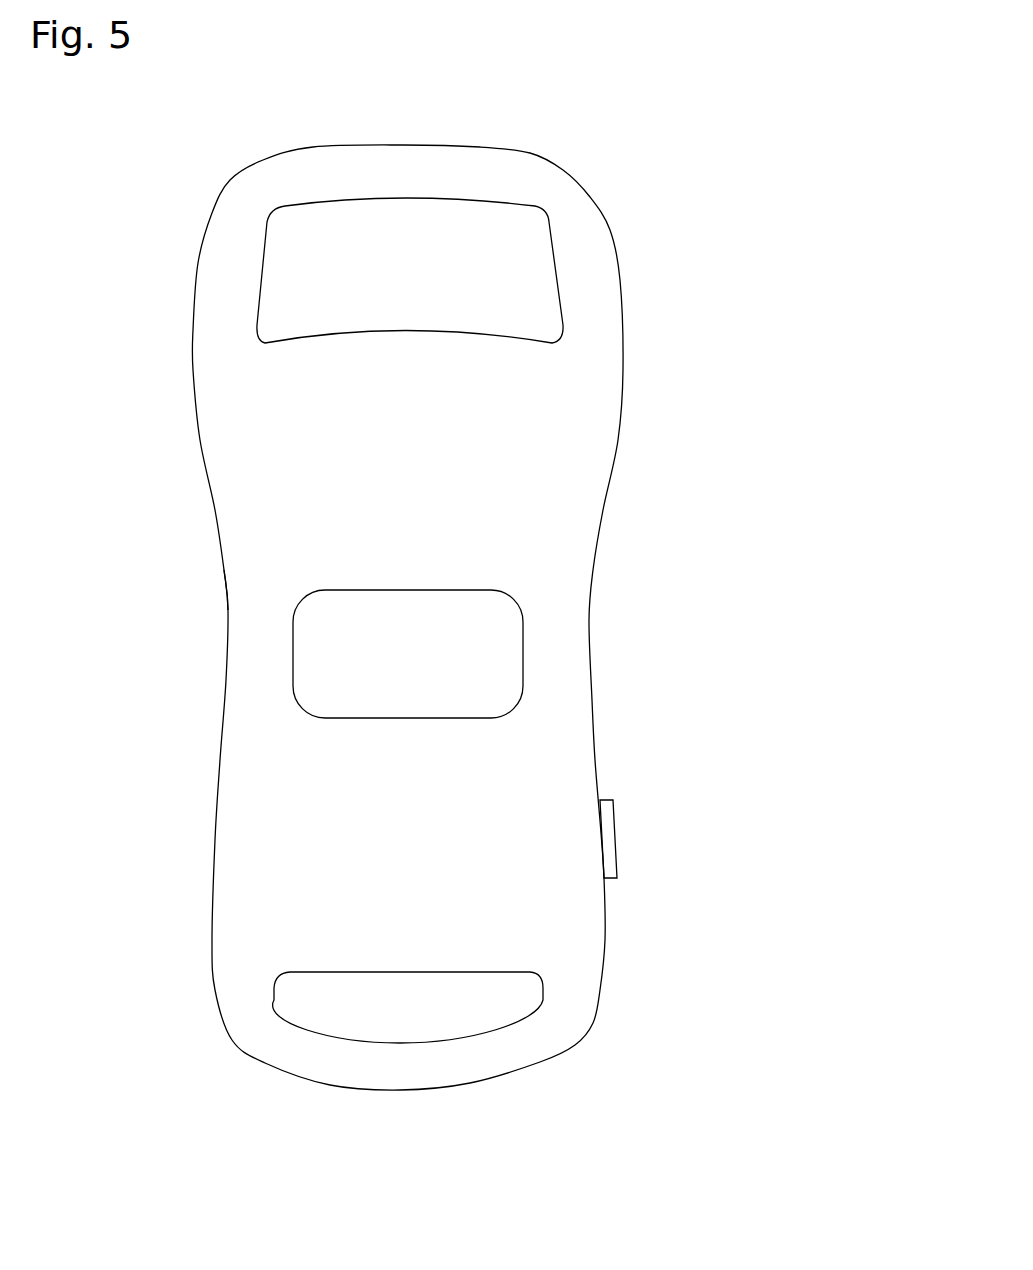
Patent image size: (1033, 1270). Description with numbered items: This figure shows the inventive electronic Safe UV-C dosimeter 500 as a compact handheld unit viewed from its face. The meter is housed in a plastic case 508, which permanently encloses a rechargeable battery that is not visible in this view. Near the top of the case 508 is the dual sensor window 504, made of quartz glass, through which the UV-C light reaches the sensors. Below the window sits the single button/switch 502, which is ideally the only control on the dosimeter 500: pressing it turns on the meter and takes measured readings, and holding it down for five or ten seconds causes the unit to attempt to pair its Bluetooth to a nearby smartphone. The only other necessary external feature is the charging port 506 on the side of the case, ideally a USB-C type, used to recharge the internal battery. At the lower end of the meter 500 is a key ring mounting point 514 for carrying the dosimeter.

The electronic Safe UV-C dosimeter 500 is at (635, 152).
The button/switch 502 is at (478, 649).
The dual sensor window 504 is at (523, 292).
The charging port 506 is at (630, 832).
The plastic case 508 is at (278, 822).
The key ring mounting point 514 is at (513, 1042).